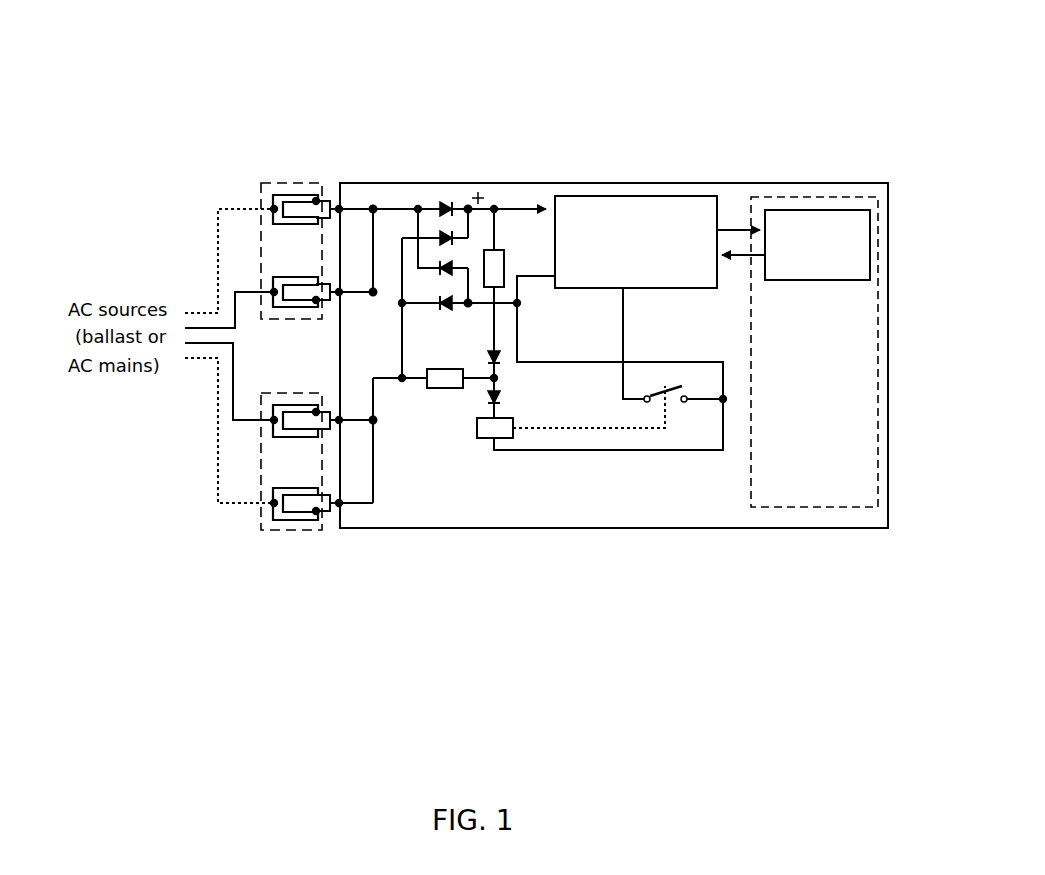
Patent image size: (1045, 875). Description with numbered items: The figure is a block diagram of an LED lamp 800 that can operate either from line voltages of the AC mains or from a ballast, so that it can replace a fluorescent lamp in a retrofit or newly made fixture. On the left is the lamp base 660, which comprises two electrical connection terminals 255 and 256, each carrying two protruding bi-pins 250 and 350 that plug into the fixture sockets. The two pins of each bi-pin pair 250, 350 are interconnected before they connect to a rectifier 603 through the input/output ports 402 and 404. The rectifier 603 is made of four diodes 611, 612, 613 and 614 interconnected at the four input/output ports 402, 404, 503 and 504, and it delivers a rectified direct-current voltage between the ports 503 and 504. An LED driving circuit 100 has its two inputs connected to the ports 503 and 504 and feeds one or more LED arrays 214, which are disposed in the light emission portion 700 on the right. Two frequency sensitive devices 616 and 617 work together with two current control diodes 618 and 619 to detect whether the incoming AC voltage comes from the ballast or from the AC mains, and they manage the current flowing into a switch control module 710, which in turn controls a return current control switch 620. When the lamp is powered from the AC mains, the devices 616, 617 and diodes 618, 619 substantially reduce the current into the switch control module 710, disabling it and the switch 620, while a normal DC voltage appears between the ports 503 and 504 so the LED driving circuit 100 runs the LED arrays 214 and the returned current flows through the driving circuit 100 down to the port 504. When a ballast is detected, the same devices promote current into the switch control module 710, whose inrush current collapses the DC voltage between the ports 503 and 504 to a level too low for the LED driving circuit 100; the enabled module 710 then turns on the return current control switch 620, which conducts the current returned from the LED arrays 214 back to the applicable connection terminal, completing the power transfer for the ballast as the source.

The LED driving circuit 100 is at (658, 195).
The LED arrays 214 is at (818, 281).
The bi-pins 250 is at (329, 203).
The electrical connection terminal 255 is at (259, 191).
The electrical connection terminal 256 is at (267, 533).
The bi-pins 350 is at (330, 514).
The input/output port 402 is at (419, 206).
The input/output port 404 is at (403, 392).
The input/output port 503 is at (501, 207).
The input/output port 504 is at (521, 307).
The rectifier 603 is at (407, 226).
The diode 611 is at (447, 204).
The diode 612 is at (453, 234).
The diode 613 is at (447, 308).
The diode 614 is at (442, 277).
The frequency sensitive device 616 is at (506, 250).
The frequency sensitive device 617 is at (442, 397).
The current control diode 618 is at (502, 364).
The current control diode 619 is at (503, 407).
The return current control switch 620 is at (673, 405).
The lamp base 660 is at (323, 175).
The light emission portion 700 is at (833, 192).
The switch control module 710 is at (507, 442).
The LED lamp 800 is at (608, 540).